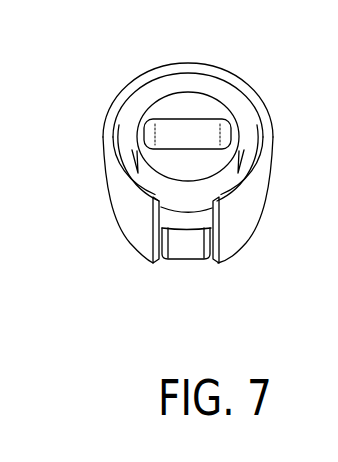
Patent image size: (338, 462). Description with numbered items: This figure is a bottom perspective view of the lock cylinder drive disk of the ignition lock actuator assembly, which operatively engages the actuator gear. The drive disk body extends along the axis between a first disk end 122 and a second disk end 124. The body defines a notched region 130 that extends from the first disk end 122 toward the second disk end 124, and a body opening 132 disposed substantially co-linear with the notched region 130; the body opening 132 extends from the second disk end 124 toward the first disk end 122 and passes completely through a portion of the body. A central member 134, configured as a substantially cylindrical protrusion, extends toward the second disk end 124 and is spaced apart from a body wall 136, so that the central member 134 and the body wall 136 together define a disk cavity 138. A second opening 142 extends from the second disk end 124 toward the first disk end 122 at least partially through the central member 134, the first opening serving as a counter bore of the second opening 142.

The first disk end 122 is at (258, 237).
The second disk end 124 is at (127, 92).
The notched region 130 is at (190, 253).
The body opening 132 is at (210, 213).
The central member 134 is at (198, 103).
The body wall 136 is at (260, 192).
The disk cavity 138 is at (264, 114).
The second opening 142 is at (168, 118).